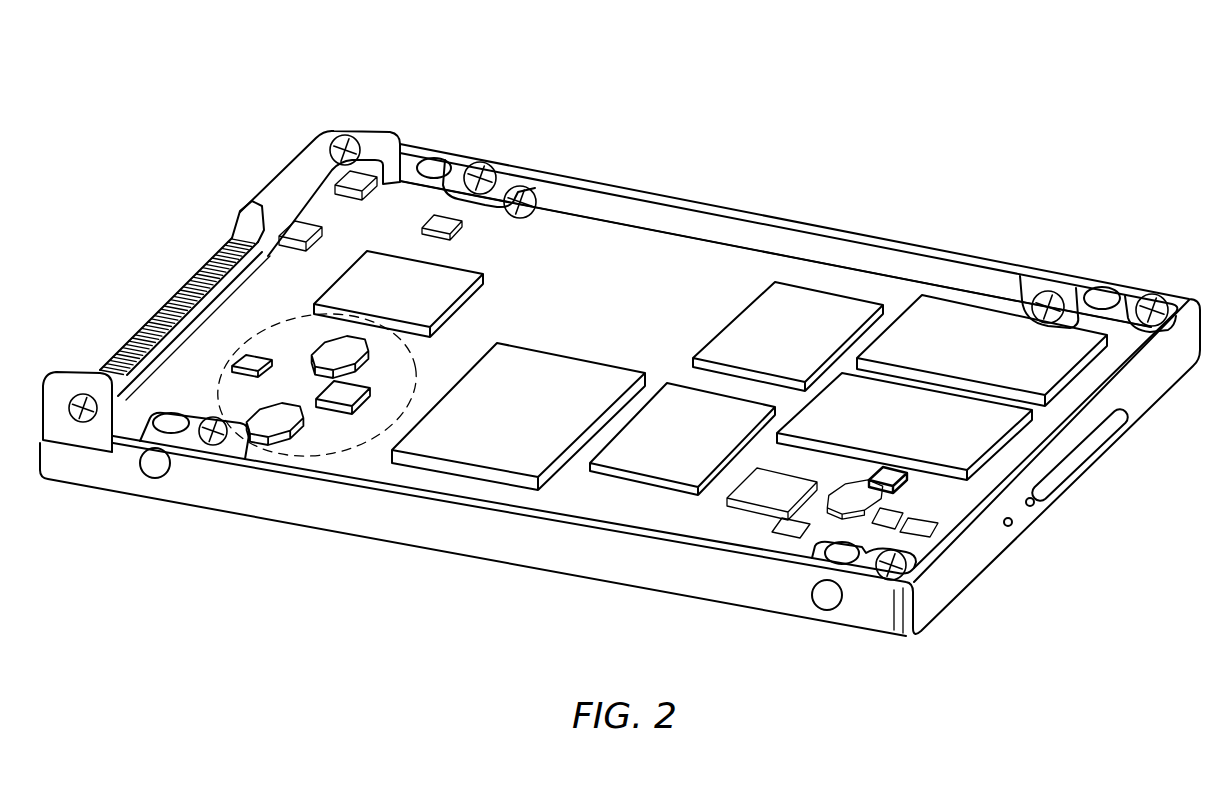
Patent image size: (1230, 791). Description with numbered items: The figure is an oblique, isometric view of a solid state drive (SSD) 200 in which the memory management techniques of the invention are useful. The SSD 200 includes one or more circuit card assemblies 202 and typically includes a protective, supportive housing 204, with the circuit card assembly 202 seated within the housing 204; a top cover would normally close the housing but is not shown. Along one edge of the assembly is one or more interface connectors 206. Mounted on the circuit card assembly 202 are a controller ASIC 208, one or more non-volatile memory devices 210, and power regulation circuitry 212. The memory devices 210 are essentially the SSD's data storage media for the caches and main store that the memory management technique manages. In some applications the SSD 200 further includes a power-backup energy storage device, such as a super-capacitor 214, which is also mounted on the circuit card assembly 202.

The solid state drive 200 is at (836, 154).
The circuit card assembly 202 is at (710, 240).
The housing 204 is at (357, 533).
The interface connector 206 is at (205, 263).
The controller ASIC 208 is at (382, 290).
The non-volatile memory device 210 is at (715, 421).
The power regulation circuitry 212 is at (283, 460).
The super-capacitor 214 is at (530, 420).